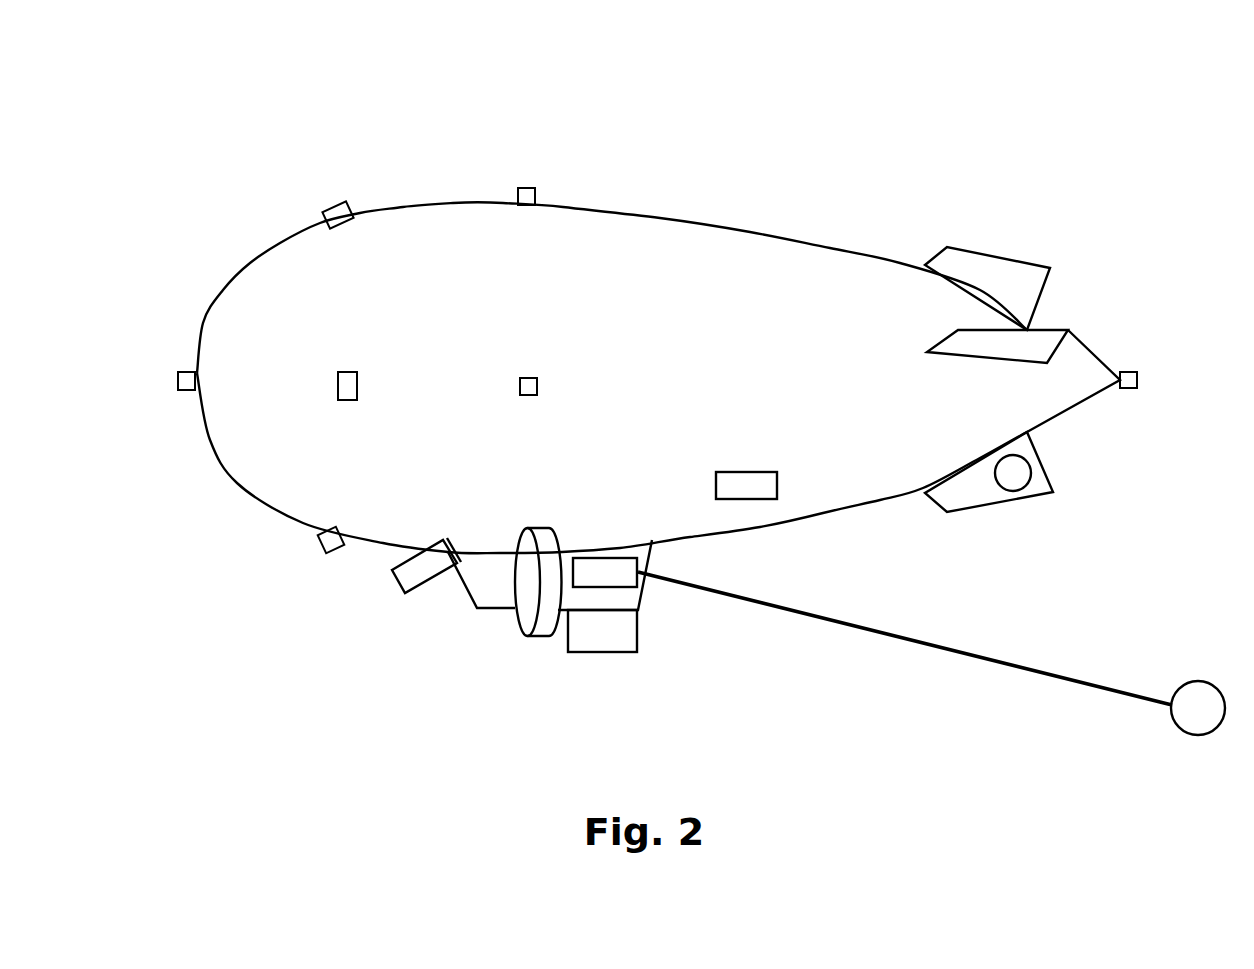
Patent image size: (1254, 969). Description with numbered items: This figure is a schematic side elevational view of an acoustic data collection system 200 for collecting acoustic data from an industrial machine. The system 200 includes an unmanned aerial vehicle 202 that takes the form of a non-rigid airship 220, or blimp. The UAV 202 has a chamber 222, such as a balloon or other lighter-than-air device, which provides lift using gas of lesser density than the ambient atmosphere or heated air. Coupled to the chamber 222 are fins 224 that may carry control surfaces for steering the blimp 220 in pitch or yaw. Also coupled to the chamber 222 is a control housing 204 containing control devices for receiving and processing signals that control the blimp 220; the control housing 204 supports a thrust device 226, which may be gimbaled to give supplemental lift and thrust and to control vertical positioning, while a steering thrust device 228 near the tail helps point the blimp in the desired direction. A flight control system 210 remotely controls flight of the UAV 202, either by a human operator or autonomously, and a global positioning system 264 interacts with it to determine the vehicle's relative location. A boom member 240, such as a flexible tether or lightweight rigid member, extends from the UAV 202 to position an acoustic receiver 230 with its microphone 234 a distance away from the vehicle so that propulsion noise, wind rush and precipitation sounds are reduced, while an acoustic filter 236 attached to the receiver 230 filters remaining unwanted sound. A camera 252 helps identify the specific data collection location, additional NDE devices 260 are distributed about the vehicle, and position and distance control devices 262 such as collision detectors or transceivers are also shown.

The acoustic data collection system 200 is at (264, 130).
The unmanned aerial vehicle 202 is at (694, 197).
The control housing 204 is at (487, 588).
The flight control system 210 is at (600, 653).
The non-rigid airship 220 is at (225, 242).
The chamber 222 is at (752, 232).
The fins 224 is at (1042, 340).
The thrust device 226 is at (530, 615).
The steering thrust device 228 is at (1012, 478).
The acoustic receiver 230 is at (1179, 664).
The microphone 234 is at (1197, 735).
The acoustic filter 236 is at (622, 577).
The boom member 240 is at (902, 648).
The camera 252 is at (405, 570).
The NDE devices 260 is at (348, 205).
The position control and distance control 262 is at (527, 188).
The global positioning system 264 is at (738, 488).